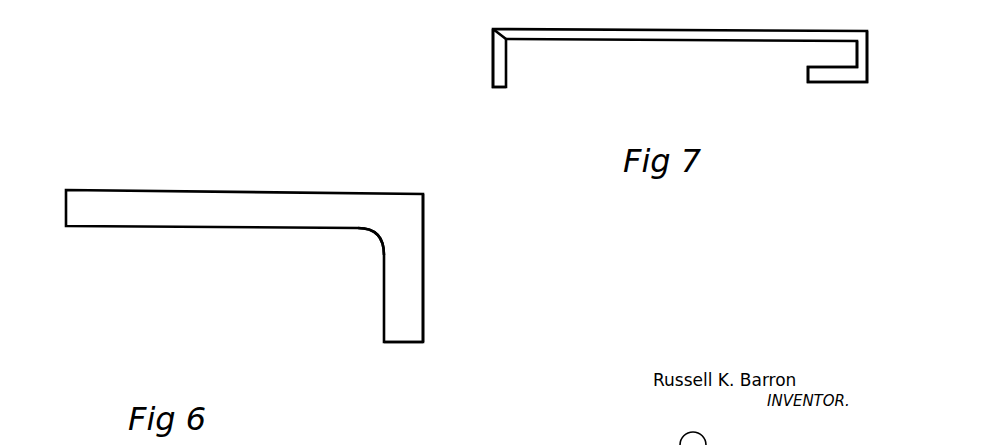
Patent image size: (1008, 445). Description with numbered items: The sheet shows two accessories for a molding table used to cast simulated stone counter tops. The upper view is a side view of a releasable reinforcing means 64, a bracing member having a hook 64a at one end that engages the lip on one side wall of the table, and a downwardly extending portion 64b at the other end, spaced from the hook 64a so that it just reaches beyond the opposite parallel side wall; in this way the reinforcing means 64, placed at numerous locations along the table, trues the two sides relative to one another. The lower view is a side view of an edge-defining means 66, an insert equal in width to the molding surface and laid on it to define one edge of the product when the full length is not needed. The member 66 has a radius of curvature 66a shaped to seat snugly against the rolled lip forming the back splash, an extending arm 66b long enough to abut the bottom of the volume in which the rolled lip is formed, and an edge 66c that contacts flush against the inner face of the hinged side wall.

In FIG. 7, the releasable reinforcing means 64 is at (693, 30).
In FIG. 7, the hook 64a is at (868, 56).
In FIG. 7, the downwardly extending portion 64b is at (493, 69).
In FIG. 6, the edge-defining means 66 is at (258, 190).
In FIG. 6, the radius of curvature 66a is at (372, 236).
In FIG. 6, the extending arm 66b is at (420, 336).
In FIG. 6, the edge 66c is at (425, 240).